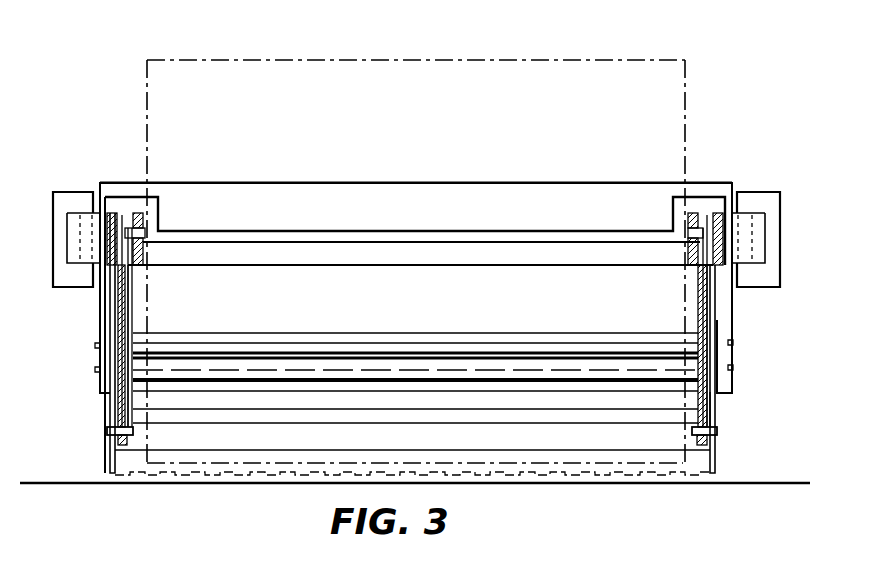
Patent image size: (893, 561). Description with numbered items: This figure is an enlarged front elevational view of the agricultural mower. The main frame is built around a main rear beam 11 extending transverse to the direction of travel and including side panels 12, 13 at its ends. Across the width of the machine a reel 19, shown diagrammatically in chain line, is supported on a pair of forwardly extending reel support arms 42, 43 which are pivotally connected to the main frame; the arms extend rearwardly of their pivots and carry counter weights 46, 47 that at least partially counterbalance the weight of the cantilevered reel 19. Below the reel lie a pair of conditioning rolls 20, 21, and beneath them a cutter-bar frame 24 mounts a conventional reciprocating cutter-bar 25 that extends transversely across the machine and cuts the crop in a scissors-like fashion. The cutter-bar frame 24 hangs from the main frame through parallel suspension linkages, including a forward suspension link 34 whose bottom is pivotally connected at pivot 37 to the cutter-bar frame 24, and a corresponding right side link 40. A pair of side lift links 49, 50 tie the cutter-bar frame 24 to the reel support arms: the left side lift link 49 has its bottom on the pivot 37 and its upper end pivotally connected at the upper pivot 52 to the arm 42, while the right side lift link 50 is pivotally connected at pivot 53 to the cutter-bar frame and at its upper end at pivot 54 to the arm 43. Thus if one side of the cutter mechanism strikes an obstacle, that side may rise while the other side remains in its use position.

The reel 19 is at (533, 57).
The main rear beam 11 is at (705, 182).
The side panel 12 is at (733, 310).
The side panel 13 is at (100, 303).
The conditioning roll 20 is at (310, 332).
The conditioning roll 21 is at (383, 317).
The cutter-bar frame 24 is at (110, 455).
The reciprocating cutter-bar 25 is at (625, 478).
The forward suspension link 34 is at (715, 402).
The pivotal connection 37 is at (718, 432).
The suspension link 40 is at (115, 315).
The reel support arm 42 is at (690, 230).
The reel support arm 43 is at (143, 222).
The counter weight 46 is at (760, 192).
The counter weight 47 is at (72, 192).
The left side lift link 49 is at (697, 293).
The right side lift link 50 is at (133, 297).
The upper pivot 52 is at (685, 238).
The pivotal connection 53 is at (110, 430).
The pivotal connection 54 is at (147, 240).